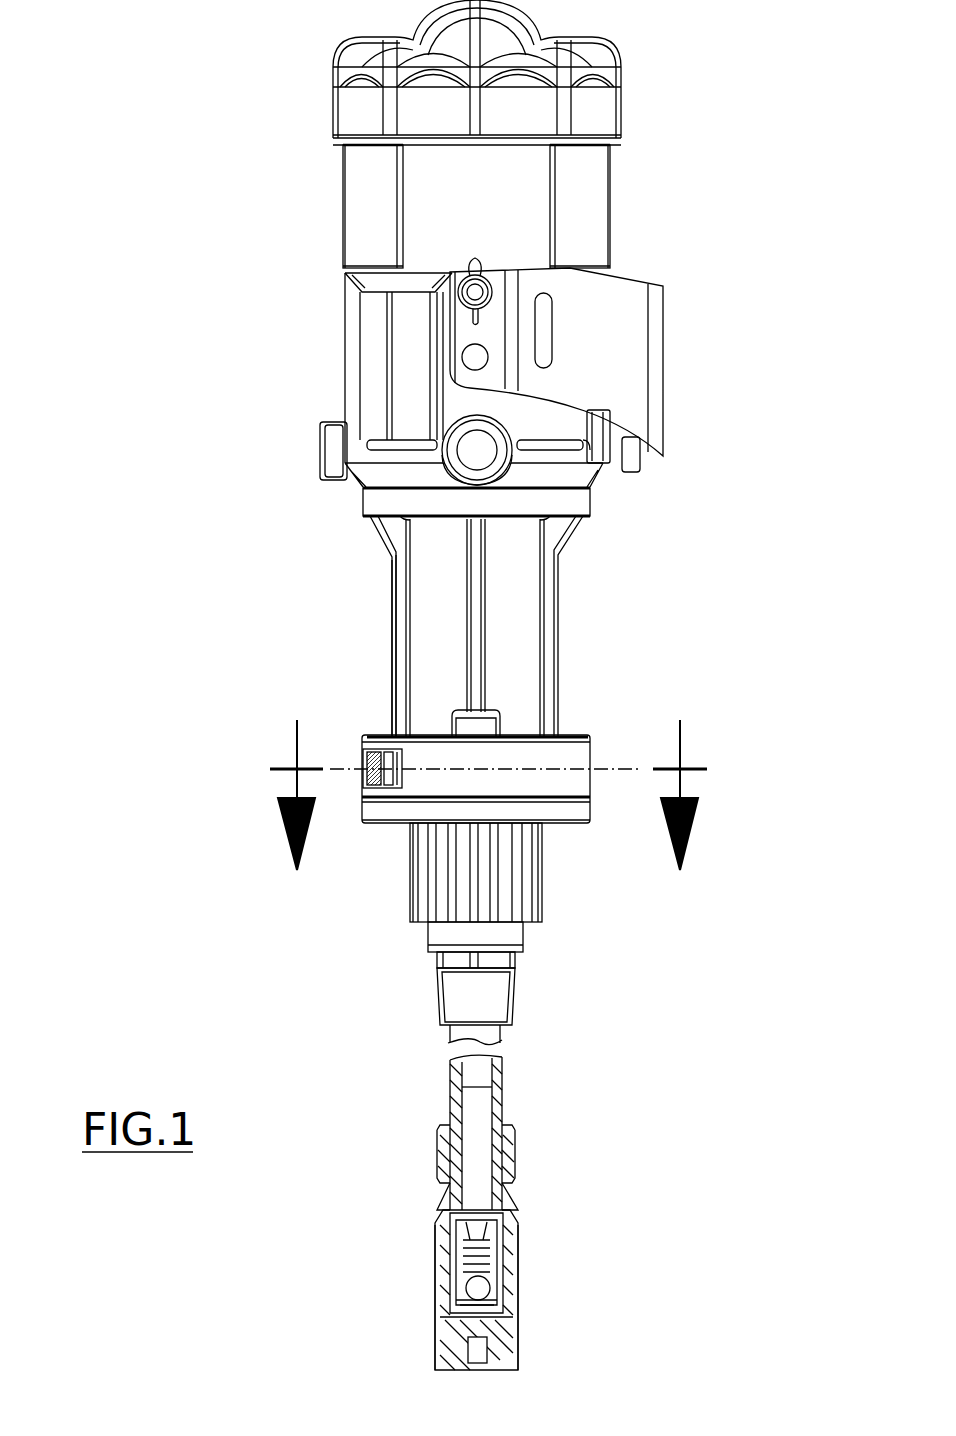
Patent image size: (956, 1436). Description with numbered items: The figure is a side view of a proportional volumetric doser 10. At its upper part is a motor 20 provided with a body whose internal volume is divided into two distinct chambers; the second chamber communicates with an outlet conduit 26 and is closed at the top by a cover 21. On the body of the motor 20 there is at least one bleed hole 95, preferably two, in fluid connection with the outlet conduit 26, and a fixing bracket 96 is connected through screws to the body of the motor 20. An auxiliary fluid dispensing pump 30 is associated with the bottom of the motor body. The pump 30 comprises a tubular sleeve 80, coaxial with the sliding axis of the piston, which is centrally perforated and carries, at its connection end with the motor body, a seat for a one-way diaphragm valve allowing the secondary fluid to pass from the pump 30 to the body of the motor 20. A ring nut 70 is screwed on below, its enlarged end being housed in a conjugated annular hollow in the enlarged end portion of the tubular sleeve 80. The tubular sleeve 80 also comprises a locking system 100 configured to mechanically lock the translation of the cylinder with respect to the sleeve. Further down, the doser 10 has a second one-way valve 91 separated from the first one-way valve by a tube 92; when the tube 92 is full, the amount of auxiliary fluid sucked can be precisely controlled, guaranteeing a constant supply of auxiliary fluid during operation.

The proportional volumetric doser 10 is at (213, 60).
The cover 21 is at (622, 75).
The motor 20 is at (330, 305).
The fixing bracket 96 is at (637, 400).
The bleed hole 95 is at (315, 440).
The outlet conduit 26 is at (478, 458).
The auxiliary fluid dispensing pump 30 is at (380, 598).
The tubular sleeve 80 is at (396, 653).
The locking system 100 is at (363, 750).
The ring nut 70 is at (543, 900).
The tube 92 is at (455, 1070).
The second one-way valve 91 is at (437, 1315).